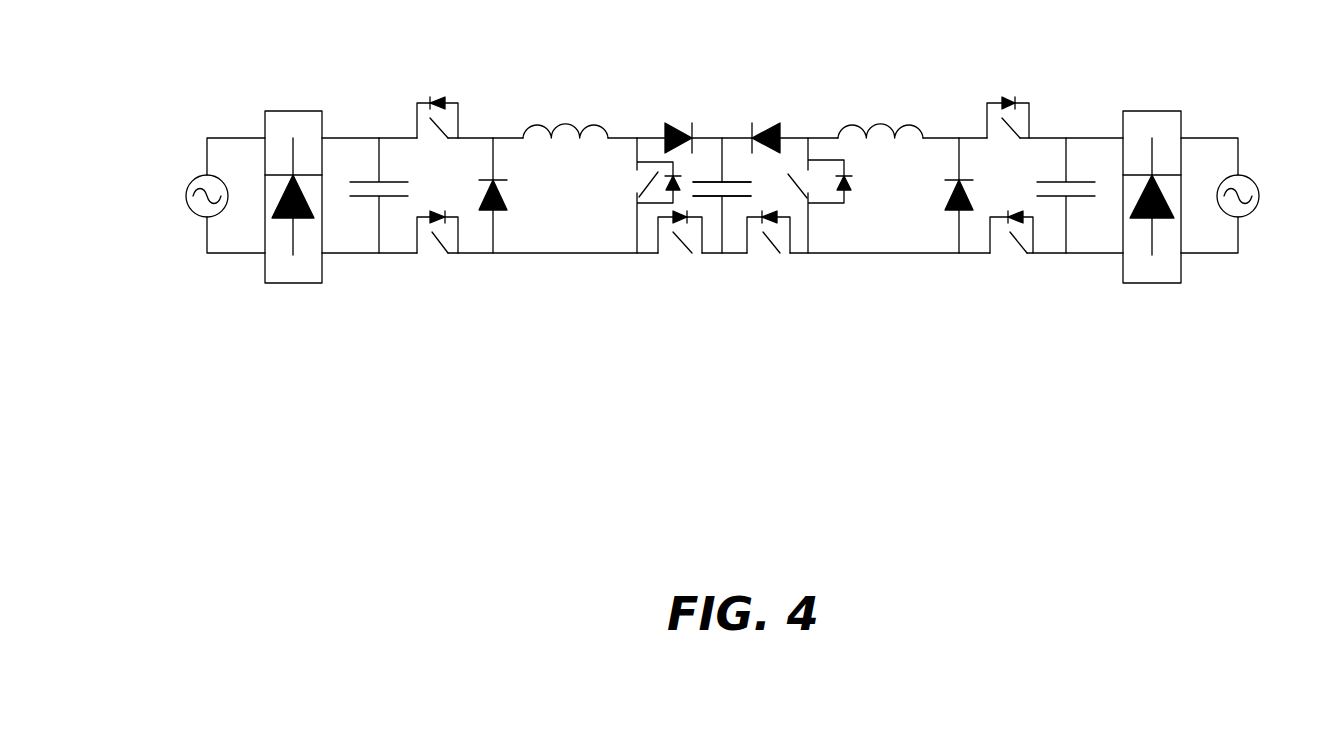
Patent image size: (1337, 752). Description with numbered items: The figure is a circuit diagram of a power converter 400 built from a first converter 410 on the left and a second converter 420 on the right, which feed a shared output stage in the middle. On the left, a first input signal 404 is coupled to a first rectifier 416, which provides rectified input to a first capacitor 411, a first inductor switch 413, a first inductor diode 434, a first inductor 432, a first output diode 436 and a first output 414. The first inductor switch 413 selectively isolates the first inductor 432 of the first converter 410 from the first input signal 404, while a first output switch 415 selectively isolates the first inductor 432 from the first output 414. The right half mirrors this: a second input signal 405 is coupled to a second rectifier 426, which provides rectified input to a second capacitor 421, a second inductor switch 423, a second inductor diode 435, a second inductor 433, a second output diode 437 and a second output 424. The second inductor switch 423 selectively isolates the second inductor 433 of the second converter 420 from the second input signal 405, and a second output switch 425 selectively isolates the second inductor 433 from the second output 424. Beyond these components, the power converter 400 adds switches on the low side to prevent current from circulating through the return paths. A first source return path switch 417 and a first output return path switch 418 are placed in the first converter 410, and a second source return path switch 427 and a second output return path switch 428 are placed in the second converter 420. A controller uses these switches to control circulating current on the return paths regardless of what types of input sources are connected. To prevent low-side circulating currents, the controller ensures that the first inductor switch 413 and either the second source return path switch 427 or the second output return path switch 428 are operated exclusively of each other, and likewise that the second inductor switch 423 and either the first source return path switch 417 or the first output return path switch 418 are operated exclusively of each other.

The power converter 400 is at (348, 52).
The first input signal 404 is at (208, 172).
The second input signal 405 is at (1238, 170).
The first converter 410 is at (581, 318).
The first capacitor 411 is at (379, 233).
The first inductor switch 413 is at (442, 147).
The first output 414 is at (720, 135).
The first output switch 415 is at (638, 188).
The first rectifier 416 is at (293, 283).
The first source return path switch 417 is at (445, 257).
The first output return path switch 418 is at (694, 257).
The second converter 420 is at (852, 318).
The second capacitor 421 is at (1068, 238).
The second inductor switch 423 is at (1018, 147).
The second output 424 is at (722, 189).
The second output switch 425 is at (811, 192).
The second rectifier 426 is at (1152, 283).
The second source return path switch 427 is at (1025, 257).
The second output return path switch 428 is at (781, 257).
The first inductor 432 is at (601, 132).
The second inductor 433 is at (847, 130).
The first inductor diode 434 is at (499, 209).
The second inductor diode 435 is at (949, 209).
The first output diode 436 is at (668, 127).
The second output diode 437 is at (782, 127).